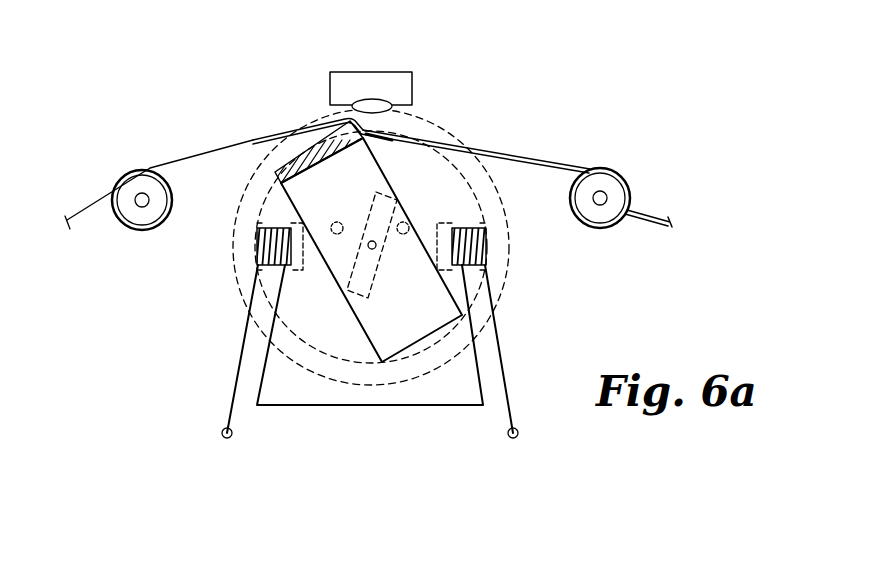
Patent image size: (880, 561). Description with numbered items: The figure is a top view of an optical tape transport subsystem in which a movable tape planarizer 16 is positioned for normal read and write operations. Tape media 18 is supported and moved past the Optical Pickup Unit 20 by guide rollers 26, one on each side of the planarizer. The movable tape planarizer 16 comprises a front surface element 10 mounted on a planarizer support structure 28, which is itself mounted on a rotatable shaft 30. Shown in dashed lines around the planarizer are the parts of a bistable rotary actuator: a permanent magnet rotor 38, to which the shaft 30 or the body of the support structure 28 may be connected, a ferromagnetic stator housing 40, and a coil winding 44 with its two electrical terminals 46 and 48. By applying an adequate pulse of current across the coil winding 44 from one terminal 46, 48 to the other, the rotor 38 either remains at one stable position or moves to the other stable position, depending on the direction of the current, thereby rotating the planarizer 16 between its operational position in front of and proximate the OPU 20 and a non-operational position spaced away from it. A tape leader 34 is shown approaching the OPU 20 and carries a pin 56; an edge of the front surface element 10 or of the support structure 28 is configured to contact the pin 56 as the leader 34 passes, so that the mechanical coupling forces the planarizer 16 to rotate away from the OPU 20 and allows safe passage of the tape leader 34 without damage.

The front surface element 10 is at (305, 138).
The movable tape planarizer 16 is at (208, 371).
The tape media 18 is at (205, 160).
The Optical Pickup Unit (OPU) 20 is at (330, 90).
The guide rollers 26 is at (145, 232).
The planarizer support structure 28 is at (365, 338).
The rotatable shaft 30 is at (372, 241).
The tape leader 34 is at (513, 150).
The permanent magnet rotor 38 is at (367, 288).
The ferromagnetic stator housing 40 is at (371, 385).
The coil winding 44 is at (480, 242).
The terminal 46 is at (227, 438).
The terminal 48 is at (513, 438).
The pin 56 is at (378, 138).